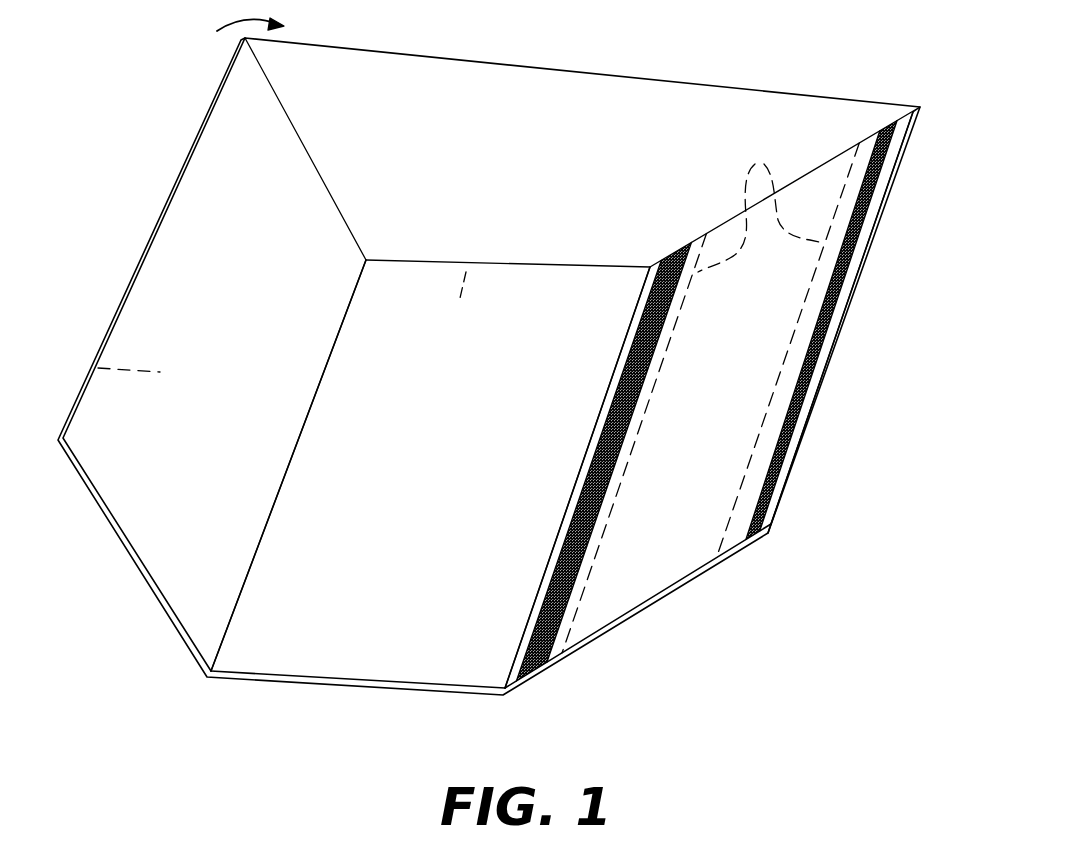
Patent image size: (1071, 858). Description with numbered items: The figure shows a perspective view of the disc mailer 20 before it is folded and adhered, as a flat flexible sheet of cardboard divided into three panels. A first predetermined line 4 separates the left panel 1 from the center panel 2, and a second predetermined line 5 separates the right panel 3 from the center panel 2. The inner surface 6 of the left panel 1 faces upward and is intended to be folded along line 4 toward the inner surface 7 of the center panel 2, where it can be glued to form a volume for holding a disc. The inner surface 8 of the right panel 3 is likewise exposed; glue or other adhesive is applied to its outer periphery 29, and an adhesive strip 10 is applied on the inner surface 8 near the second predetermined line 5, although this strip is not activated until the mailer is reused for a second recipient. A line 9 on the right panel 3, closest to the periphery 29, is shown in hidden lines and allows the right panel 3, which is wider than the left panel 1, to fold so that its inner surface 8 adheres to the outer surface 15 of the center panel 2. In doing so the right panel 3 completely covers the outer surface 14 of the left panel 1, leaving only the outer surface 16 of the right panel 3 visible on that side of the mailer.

The left panel 1 is at (178, 629).
The center panel 2 is at (338, 683).
The right panel 3 is at (648, 604).
The first predetermined line 4 is at (275, 505).
The second predetermined line 5 is at (552, 560).
The inner surface of the left panel 6 is at (288, 354).
The inner surface of the center panel 7 is at (508, 474).
The inner surface of the right panel 8 is at (785, 315).
The line 9 is at (761, 204).
The adhesive strip 10 is at (668, 262).
The outer surface of the left panel 14 is at (96, 368).
The outer surface of the center panel 15 is at (470, 262).
The outer surface of the right panel 16 is at (772, 518).
The disc mailer 20 is at (484, 158).
The outer periphery 29 is at (897, 124).